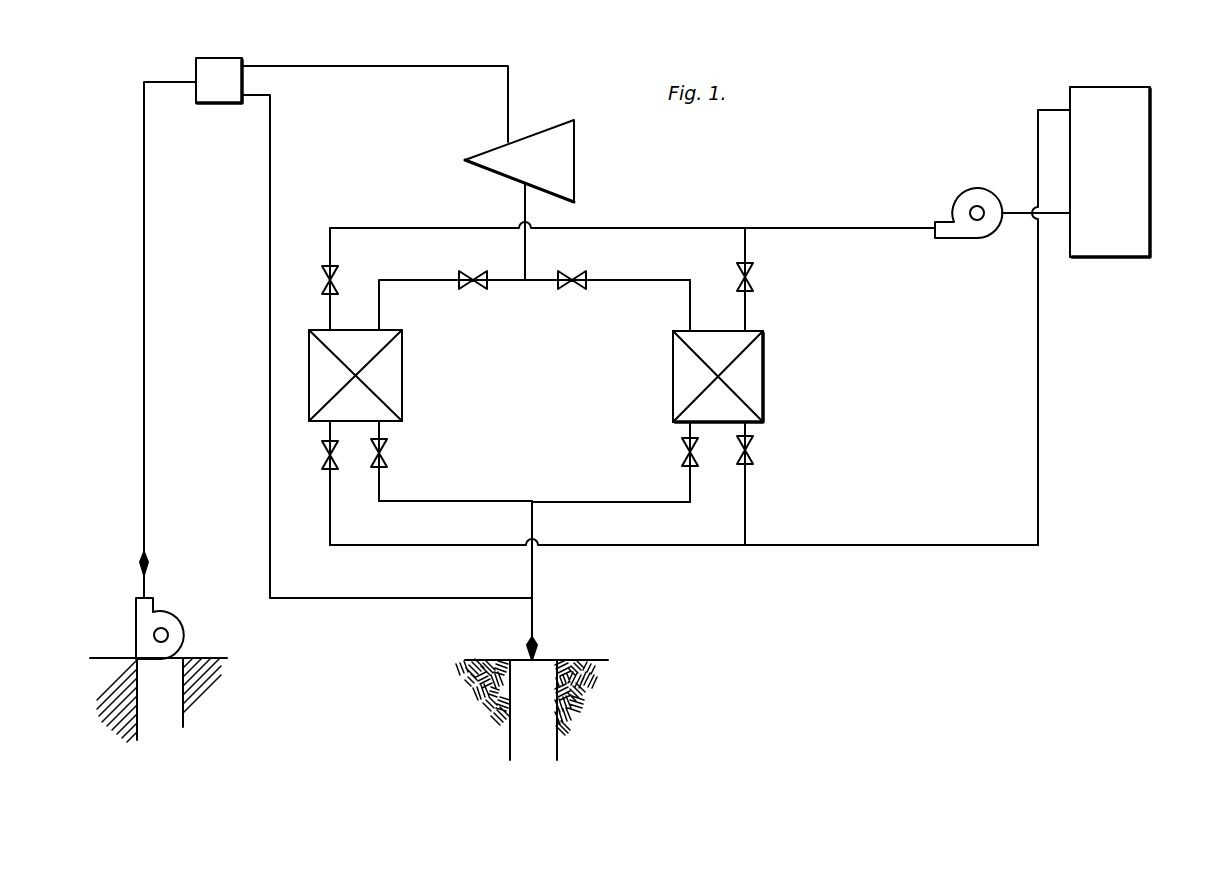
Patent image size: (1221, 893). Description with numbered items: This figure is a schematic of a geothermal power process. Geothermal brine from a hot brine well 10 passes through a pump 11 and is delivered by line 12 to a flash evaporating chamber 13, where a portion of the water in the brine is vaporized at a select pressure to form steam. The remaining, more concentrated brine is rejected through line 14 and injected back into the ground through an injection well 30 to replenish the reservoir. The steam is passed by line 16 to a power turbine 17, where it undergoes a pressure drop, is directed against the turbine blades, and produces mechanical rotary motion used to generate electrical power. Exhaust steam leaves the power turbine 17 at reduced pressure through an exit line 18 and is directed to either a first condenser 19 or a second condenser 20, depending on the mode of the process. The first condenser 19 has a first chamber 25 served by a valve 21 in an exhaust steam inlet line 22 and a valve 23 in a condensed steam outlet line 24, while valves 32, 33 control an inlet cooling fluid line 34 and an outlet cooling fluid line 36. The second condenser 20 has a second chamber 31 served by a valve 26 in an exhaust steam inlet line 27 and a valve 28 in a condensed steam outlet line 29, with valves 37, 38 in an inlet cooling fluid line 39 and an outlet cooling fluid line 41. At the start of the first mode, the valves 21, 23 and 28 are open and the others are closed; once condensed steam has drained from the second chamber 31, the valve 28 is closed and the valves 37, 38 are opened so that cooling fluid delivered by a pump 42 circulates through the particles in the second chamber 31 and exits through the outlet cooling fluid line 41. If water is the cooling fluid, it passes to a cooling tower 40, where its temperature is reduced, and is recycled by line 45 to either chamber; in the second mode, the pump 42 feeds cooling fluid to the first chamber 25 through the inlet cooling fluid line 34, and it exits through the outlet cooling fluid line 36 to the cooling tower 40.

The hot brine well 10 is at (103, 697).
The pump 11 is at (180, 618).
The line 12 is at (145, 421).
The flash evaporating chamber 13 is at (232, 59).
The line 14 is at (270, 132).
The line 16 is at (434, 68).
The power turbine 17 is at (574, 160).
The exit line 18 is at (525, 240).
The first condenser 19 is at (704, 331).
The second condenser 20 is at (346, 330).
The valve 21 is at (572, 271).
The exhaust steam inlet line 22 is at (638, 281).
The valve 23 is at (682, 452).
The condensed steam outlet line 24 is at (575, 502).
The first chamber 25 is at (763, 373).
The valve 26 is at (470, 272).
The exhaust steam inlet line 27 is at (412, 266).
The valve 28 is at (387, 456).
The condensed steam outlet line 29 is at (450, 501).
The injection well 30 is at (586, 699).
The second chamber 31 is at (402, 381).
The valve 32 is at (751, 281).
The valve 33 is at (753, 452).
The inlet cooling fluid line 34 is at (745, 310).
The outlet cooling fluid line 36 is at (745, 500).
The valve 37 is at (322, 280).
The valve 38 is at (338, 462).
The inlet cooling fluid line 39 is at (330, 313).
The cooling tower 40 is at (1150, 141).
The outlet cooling fluid line 41 is at (330, 507).
The pump 42 is at (1000, 170).
The line 45 is at (832, 228).